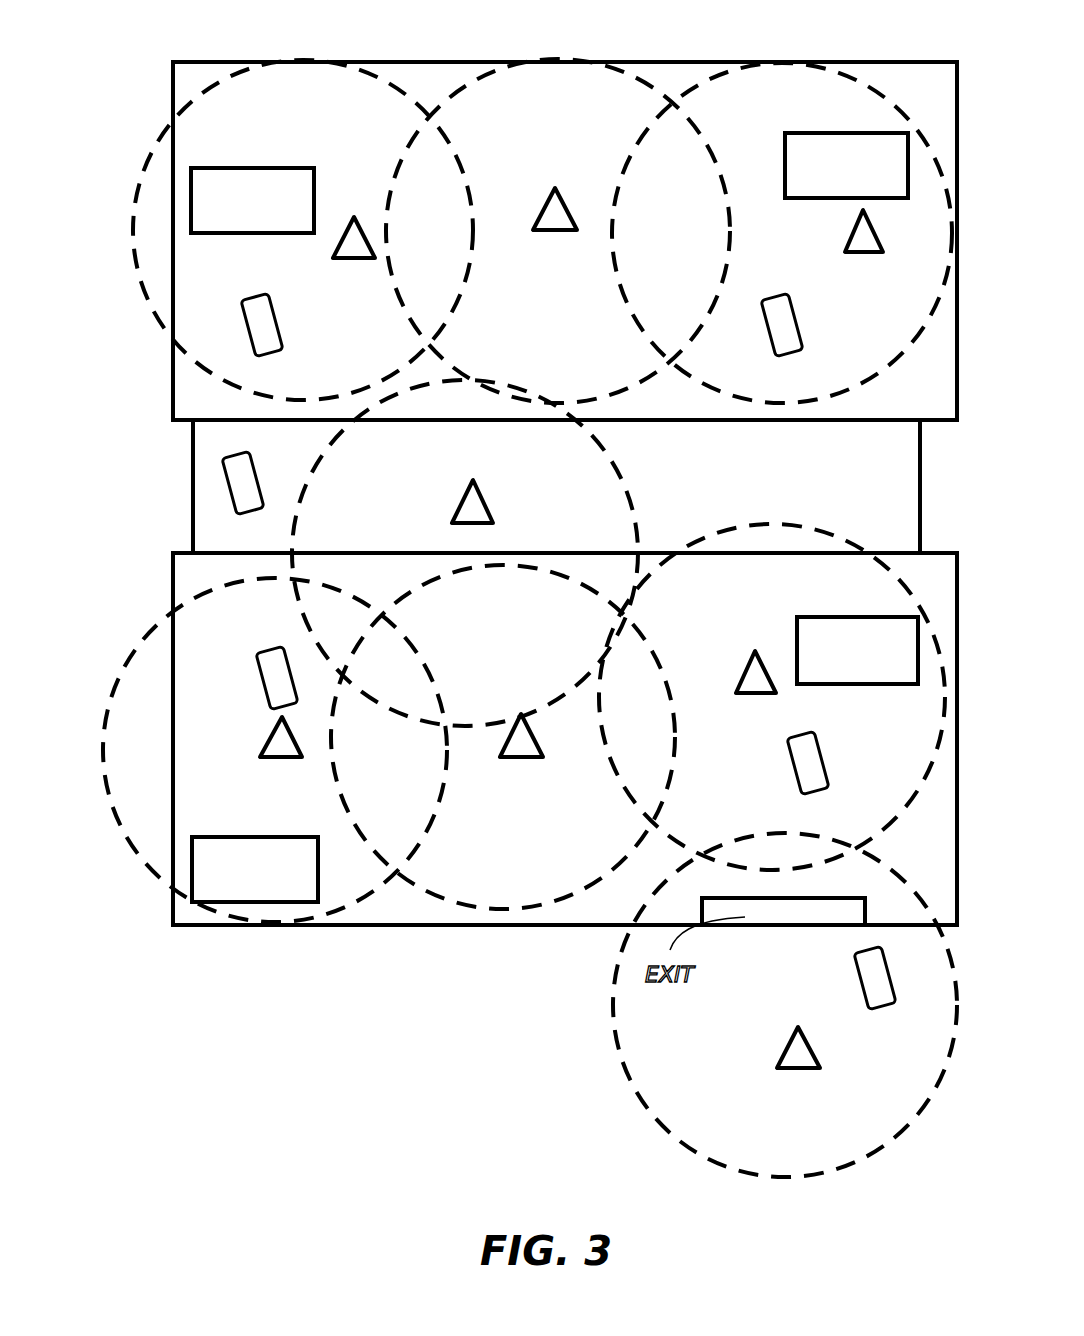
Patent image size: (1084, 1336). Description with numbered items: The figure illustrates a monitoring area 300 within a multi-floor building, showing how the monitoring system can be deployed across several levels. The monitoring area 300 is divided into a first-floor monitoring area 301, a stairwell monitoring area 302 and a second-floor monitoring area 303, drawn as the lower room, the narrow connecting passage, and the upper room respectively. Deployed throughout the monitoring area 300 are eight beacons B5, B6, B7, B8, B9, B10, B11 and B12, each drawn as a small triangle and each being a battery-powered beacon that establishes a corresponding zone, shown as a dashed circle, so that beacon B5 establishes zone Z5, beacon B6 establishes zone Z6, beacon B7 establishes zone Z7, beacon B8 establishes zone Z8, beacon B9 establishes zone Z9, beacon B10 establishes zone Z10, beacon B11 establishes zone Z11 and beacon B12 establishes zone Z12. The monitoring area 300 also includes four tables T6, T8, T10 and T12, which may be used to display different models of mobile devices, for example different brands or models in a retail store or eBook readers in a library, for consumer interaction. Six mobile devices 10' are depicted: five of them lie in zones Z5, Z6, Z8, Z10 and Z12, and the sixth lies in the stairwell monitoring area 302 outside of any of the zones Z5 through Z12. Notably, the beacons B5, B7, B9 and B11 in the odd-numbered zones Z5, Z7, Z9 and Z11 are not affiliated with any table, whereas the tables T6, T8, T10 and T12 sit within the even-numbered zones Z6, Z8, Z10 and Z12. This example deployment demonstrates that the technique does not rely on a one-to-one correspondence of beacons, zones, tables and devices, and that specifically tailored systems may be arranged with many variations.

The monitoring area 300 is at (773, 52).
The first-floor monitoring area 301 is at (173, 575).
The stairwell monitoring area 302 is at (193, 440).
The second-floor monitoring area 303 is at (173, 88).
The zone Z5 is at (613, 995).
The zone Z6 is at (193, 602).
The zone Z7 is at (443, 575).
The zone Z8 is at (701, 540).
The zone Z9 is at (403, 387).
The zone Z10 is at (240, 67).
The zone Z11 is at (498, 75).
The zone Z12 is at (700, 87).
The beacon B5 is at (786, 1043).
The beacon B6 is at (268, 732).
The beacon B7 is at (521, 758).
The beacon B8 is at (759, 694).
The beacon B9 is at (460, 498).
The beacon B10 is at (350, 260).
The beacon B11 is at (553, 230).
The beacon B12 is at (863, 252).
The table T6 is at (257, 837).
The table T8 is at (859, 686).
The table T10 is at (252, 233).
The table T12 is at (823, 198).
The mobile devices 10' is at (516, 651).